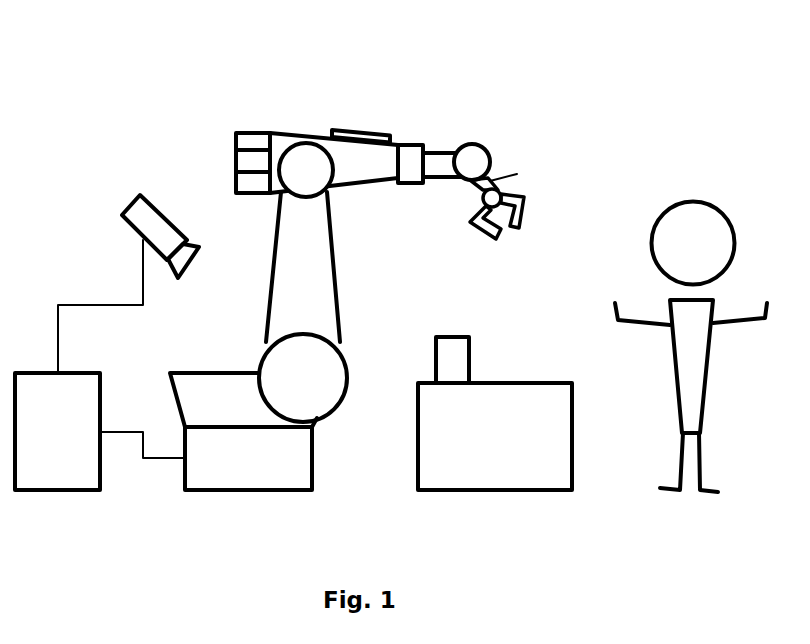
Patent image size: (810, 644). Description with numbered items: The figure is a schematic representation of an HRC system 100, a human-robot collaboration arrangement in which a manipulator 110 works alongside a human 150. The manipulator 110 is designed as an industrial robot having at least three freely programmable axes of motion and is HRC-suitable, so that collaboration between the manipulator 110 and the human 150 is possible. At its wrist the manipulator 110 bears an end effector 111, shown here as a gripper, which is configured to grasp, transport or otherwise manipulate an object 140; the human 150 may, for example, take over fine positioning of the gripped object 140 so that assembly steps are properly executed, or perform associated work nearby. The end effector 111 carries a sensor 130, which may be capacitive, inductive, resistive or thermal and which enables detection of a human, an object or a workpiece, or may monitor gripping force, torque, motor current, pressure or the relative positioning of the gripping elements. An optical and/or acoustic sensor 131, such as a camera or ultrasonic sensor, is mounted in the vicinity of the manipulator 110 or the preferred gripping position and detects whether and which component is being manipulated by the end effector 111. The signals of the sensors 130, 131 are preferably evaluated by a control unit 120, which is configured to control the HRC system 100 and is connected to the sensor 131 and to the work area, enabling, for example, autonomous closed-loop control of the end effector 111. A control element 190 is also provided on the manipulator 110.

The HRC system 100 is at (60, 41).
The manipulator 110 is at (264, 114).
The end effector 111 is at (503, 233).
The control unit 120 is at (100, 431).
The sensor 130 is at (520, 170).
The optical and/or acoustic sensor 131 is at (123, 210).
The object 140 is at (445, 337).
The human 150 is at (694, 182).
The control element 190 is at (366, 131).